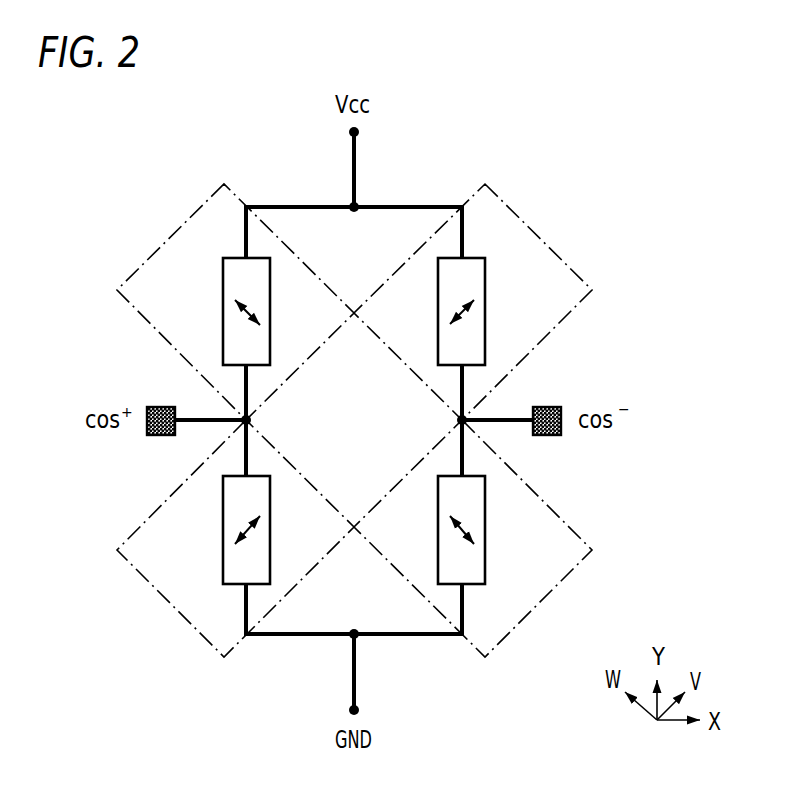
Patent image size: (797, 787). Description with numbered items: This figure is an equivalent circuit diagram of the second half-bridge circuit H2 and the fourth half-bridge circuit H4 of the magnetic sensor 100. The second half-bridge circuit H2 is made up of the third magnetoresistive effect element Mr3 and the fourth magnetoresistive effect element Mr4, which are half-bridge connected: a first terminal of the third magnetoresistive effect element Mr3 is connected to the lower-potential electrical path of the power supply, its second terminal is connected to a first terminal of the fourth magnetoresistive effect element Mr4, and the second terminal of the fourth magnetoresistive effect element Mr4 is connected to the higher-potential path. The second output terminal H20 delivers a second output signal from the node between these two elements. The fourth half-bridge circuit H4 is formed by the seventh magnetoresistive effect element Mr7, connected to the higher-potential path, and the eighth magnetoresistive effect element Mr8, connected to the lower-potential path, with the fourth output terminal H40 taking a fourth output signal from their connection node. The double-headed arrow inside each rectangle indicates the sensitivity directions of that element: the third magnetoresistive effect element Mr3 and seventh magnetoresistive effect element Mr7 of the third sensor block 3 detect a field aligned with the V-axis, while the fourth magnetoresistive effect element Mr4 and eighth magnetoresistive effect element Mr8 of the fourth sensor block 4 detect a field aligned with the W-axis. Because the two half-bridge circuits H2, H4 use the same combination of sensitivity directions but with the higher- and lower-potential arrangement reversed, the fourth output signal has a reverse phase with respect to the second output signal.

The magnetic sensor 100 is at (650, 115).
The second half-bridge circuit H2 is at (192, 183).
The fourth half-bridge circuit H4 is at (498, 186).
The third sensor block 3 is at (190, 623).
The fourth sensor block 4 is at (517, 623).
The fourth magnetoresistive effect element Mr4 is at (217, 285).
The seventh magnetoresistive effect element Mr7 is at (493, 285).
The third magnetoresistive effect element Mr3 is at (217, 550).
The eighth magnetoresistive effect element Mr8 is at (490, 550).
The second output terminal H20 is at (158, 406).
The fourth output terminal H40 is at (547, 405).